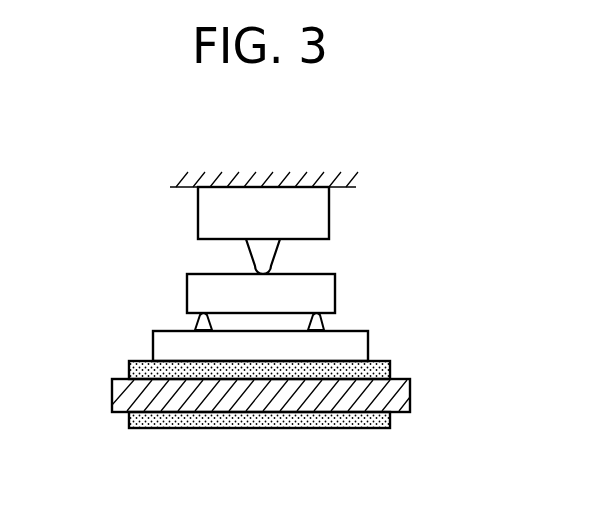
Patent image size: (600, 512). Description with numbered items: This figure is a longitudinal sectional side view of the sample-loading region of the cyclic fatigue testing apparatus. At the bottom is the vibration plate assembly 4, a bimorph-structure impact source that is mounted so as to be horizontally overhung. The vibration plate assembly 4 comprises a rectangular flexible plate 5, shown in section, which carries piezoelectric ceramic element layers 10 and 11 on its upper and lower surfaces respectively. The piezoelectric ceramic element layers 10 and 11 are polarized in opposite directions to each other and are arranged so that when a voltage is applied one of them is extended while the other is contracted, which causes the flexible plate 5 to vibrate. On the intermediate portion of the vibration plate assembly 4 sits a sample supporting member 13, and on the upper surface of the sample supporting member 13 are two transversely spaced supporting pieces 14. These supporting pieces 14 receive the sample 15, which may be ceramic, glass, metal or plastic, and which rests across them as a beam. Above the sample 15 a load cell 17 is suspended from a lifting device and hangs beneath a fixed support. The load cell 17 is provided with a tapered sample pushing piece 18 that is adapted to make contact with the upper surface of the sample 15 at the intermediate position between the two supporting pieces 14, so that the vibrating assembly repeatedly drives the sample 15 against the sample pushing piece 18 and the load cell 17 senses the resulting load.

The vibration plate assembly 4 is at (262, 416).
The flexible plate 5 is at (140, 395).
The piezoelectric ceramic element layer 10 is at (380, 372).
The piezoelectric ceramic element layer 11 is at (300, 428).
The sample supporting member 13 is at (167, 347).
The supporting pieces 14 is at (200, 325).
The sample 15 is at (197, 295).
The load cell 17 is at (220, 213).
The sample pushing piece 18 is at (260, 258).